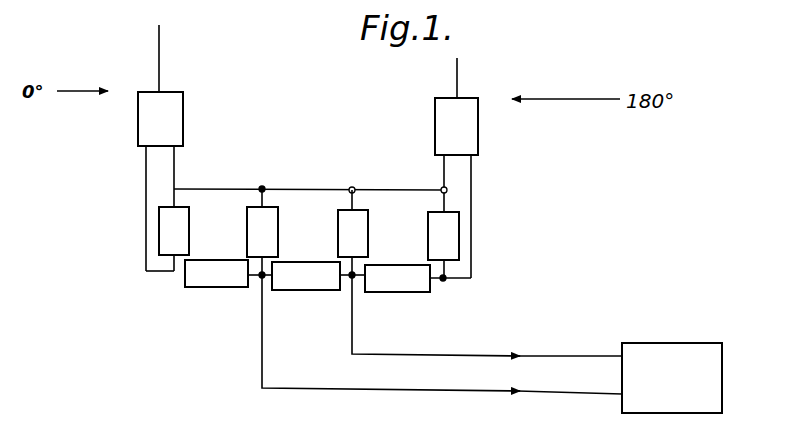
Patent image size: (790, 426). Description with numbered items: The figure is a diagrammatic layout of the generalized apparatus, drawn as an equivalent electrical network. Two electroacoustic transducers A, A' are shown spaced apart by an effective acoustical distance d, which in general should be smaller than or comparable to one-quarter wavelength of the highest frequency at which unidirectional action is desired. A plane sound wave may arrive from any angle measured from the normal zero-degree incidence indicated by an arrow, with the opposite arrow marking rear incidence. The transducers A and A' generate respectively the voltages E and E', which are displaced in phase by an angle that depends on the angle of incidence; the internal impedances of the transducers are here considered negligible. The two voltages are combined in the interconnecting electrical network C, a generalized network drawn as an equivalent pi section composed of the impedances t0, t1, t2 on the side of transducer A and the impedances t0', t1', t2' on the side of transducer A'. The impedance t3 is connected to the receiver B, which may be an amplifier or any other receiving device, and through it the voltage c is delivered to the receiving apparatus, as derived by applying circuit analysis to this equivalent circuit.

The electroacoustic transducer A is at (173, 119).
The electroacoustic transducer A' is at (425, 125).
The voltage generated by transducer A E is at (160, 208).
The voltage generated by transducer A' E' is at (457, 216).
The impedance Z0 t0 is at (149, 239).
The impedance Z0' t0' is at (469, 245).
The impedance Z1 t1 is at (228, 299).
The impedance Z1' t1' is at (418, 300).
The impedance Z2 t2 is at (267, 232).
The impedance Z2' t2' is at (372, 232).
The impedance Z3 t3 is at (308, 284).
The receiver B is at (708, 378).
The interconnecting electrical network C is at (210, 238).
The voltage delivered to the receiving apparatus c is at (442, 334).
The effective acoustical distance d is at (455, 77).